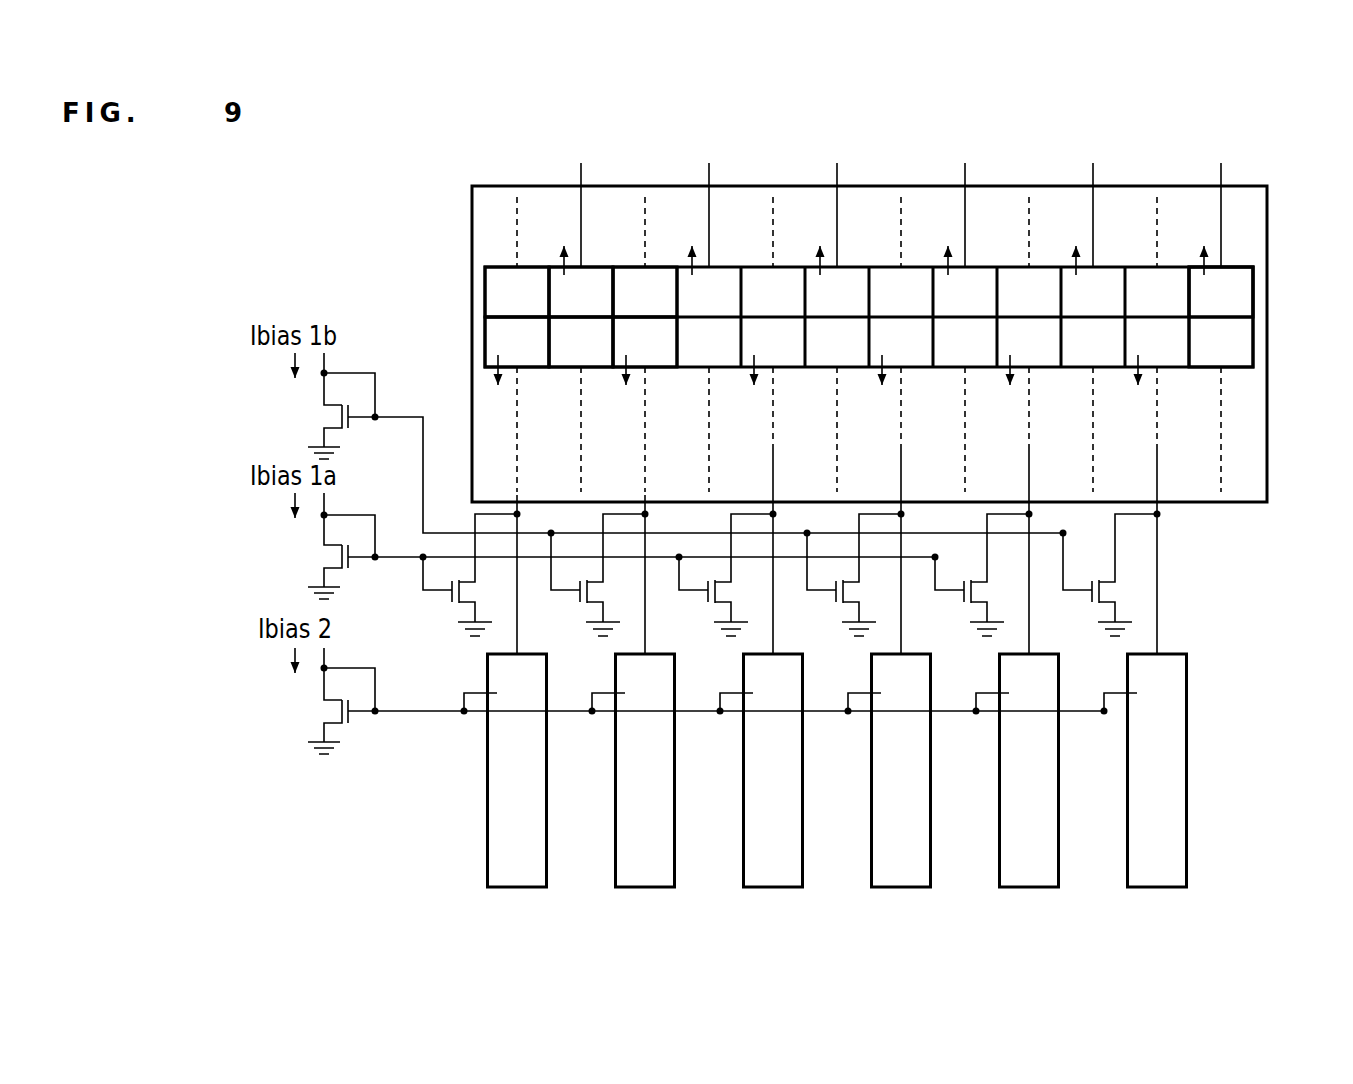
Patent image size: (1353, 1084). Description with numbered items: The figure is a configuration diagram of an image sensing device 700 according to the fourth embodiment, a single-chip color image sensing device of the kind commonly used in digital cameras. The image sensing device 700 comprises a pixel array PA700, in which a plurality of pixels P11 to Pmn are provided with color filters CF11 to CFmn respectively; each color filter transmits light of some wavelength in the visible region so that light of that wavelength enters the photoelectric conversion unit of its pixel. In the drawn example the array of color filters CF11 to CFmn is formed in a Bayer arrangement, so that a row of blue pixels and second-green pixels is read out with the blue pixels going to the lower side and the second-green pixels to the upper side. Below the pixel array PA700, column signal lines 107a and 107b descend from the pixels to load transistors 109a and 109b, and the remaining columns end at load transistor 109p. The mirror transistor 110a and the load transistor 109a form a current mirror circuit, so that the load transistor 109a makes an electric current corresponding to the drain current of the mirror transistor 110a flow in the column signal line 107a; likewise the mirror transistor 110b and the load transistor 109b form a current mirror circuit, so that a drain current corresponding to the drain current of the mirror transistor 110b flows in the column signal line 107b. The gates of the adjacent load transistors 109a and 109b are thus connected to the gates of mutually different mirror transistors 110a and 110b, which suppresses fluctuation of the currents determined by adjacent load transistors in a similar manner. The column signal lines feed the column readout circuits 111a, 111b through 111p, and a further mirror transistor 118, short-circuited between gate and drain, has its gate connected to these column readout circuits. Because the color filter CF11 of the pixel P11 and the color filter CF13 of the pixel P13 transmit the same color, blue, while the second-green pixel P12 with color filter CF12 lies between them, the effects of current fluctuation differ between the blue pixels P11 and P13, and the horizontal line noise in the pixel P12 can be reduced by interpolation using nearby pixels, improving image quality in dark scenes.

The pixel array PA700 is at (482, 176).
The pixel P11 is at (398, 316).
The pixel P12 is at (556, 405).
The pixel P13 is at (684, 405).
The pixel Pmn is at (1249, 116).
The color filter CF11 is at (487, 342).
The color filter CF12 is at (562, 357).
The color filter CF13 is at (653, 357).
The color filter CFmn is at (1242, 272).
The column signal line 107a is at (557, 483).
The column signal line 107b is at (685, 483).
The mirror transistor 110a is at (377, 577).
The mirror transistor 110b is at (377, 435).
The mirror transistor 118 is at (350, 722).
The load transistor 109a is at (441, 604).
The load transistor 109b is at (577, 604).
The load transistor 109p is at (1075, 602).
The column readout circuit 111a is at (520, 888).
The column readout circuit 111b is at (648, 888).
The column readout circuit 111p is at (1160, 888).
The image sensing device 700 is at (380, 876).